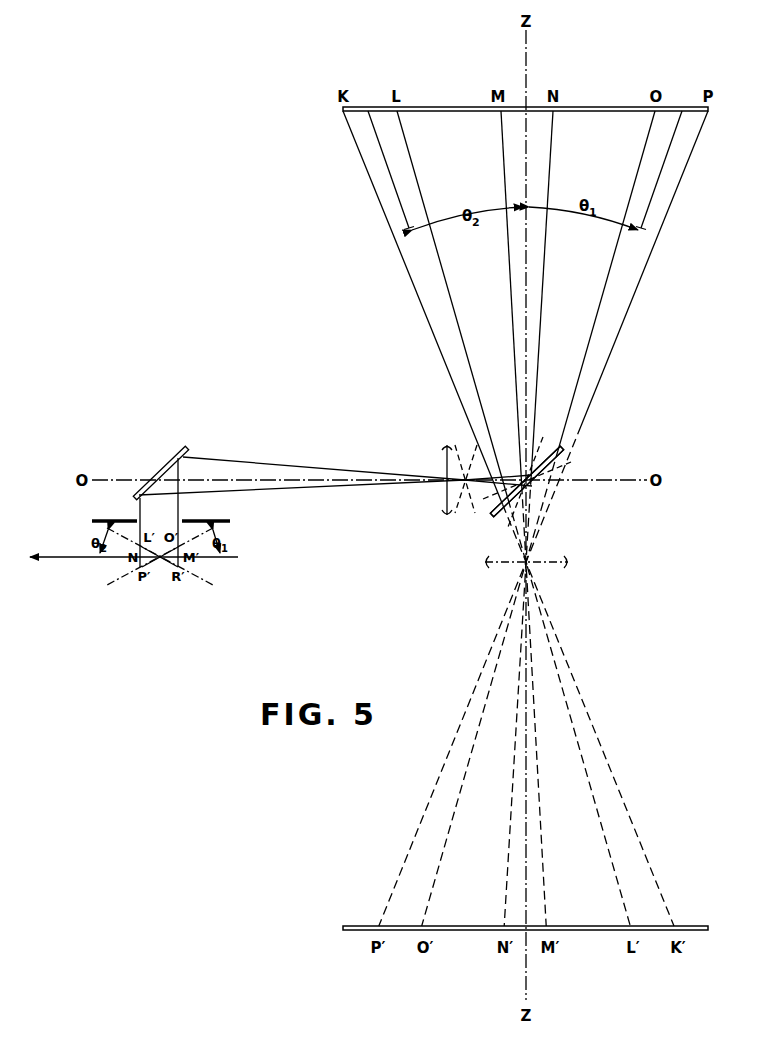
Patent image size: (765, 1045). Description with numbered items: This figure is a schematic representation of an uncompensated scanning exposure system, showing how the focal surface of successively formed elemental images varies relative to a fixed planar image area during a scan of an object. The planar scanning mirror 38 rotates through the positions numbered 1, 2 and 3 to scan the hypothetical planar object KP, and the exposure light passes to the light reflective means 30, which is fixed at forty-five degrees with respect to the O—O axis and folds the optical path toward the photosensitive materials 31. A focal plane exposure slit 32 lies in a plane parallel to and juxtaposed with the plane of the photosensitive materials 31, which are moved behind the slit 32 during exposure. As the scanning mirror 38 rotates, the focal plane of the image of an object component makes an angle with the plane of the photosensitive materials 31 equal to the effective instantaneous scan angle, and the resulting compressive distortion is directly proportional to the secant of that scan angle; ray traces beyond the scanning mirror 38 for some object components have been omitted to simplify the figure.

The light reflective means 30 is at (168, 436).
The photosensitive materials 31 is at (77, 558).
The focal plane exposure slit 32 is at (135, 518).
The planar scanning mirror 38 is at (491, 518).
The scanning mirror position 1 is at (518, 468).
The scanning mirror position 2 is at (500, 471).
The scanning mirror position 3 is at (501, 473).